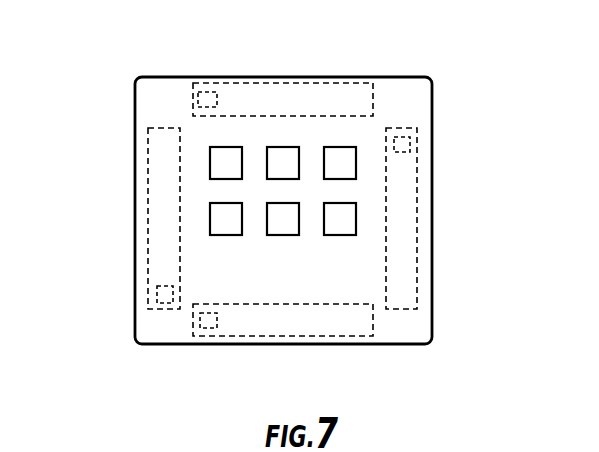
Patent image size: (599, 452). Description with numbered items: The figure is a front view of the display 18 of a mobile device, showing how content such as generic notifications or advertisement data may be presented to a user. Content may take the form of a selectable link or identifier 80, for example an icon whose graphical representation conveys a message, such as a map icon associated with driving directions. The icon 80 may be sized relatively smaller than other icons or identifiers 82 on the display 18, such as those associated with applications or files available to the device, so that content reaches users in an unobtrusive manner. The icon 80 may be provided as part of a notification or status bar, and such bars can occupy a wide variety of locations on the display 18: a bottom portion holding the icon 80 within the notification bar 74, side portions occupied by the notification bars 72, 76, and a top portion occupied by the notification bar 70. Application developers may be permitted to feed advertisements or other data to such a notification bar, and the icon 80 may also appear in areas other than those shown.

The display 18 is at (385, 61).
The notification bar 70 is at (292, 88).
The notification bar 72 is at (412, 210).
The notification bar 74 is at (300, 336).
The notification bar 76 is at (148, 197).
The selectable link or identifier 80 is at (209, 95).
The button 82 is at (347, 148).